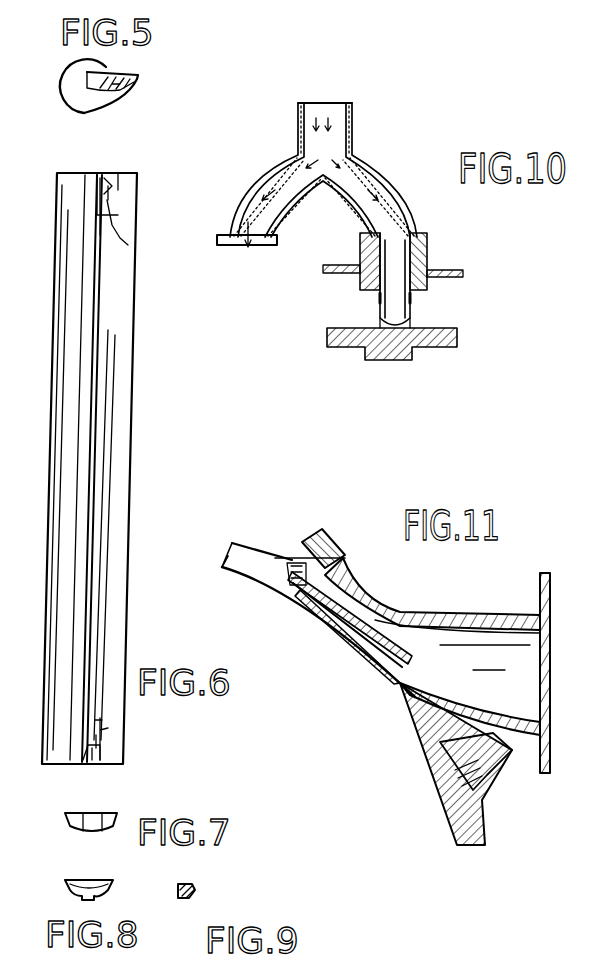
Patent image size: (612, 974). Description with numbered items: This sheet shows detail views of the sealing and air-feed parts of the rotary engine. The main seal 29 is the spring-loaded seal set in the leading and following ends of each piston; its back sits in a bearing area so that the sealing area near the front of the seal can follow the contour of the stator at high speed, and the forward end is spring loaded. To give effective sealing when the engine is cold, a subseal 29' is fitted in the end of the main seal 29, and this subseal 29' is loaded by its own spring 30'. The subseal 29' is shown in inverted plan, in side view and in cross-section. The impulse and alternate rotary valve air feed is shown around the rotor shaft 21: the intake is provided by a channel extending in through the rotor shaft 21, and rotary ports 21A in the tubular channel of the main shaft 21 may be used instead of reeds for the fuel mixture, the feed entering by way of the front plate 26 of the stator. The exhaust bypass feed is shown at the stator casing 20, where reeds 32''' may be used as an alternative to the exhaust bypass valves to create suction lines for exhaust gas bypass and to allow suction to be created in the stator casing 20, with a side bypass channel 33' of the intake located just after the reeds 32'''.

In FIG. 11, the stator casing 20 is at (240, 572).
In FIG. 10, the rotor shaft 21 is at (410, 353).
In FIG. 10, the rotary ports 21A is at (374, 302).
In FIG. 10, the front plate 26 is at (317, 178).
In FIG. 5, the main seal 29 is at (61, 83).
In FIG. 6, the main seal 29 is at (75, 455).
In FIG. 5, the subseal 29' is at (140, 103).
In FIG. 6, the subseal 29' is at (134, 467).
In FIG. 6, the spring 30' is at (145, 469).
In FIG. 11, the reed 32''' is at (393, 687).
In FIG. 11, the side bypass channel 33' is at (437, 665).